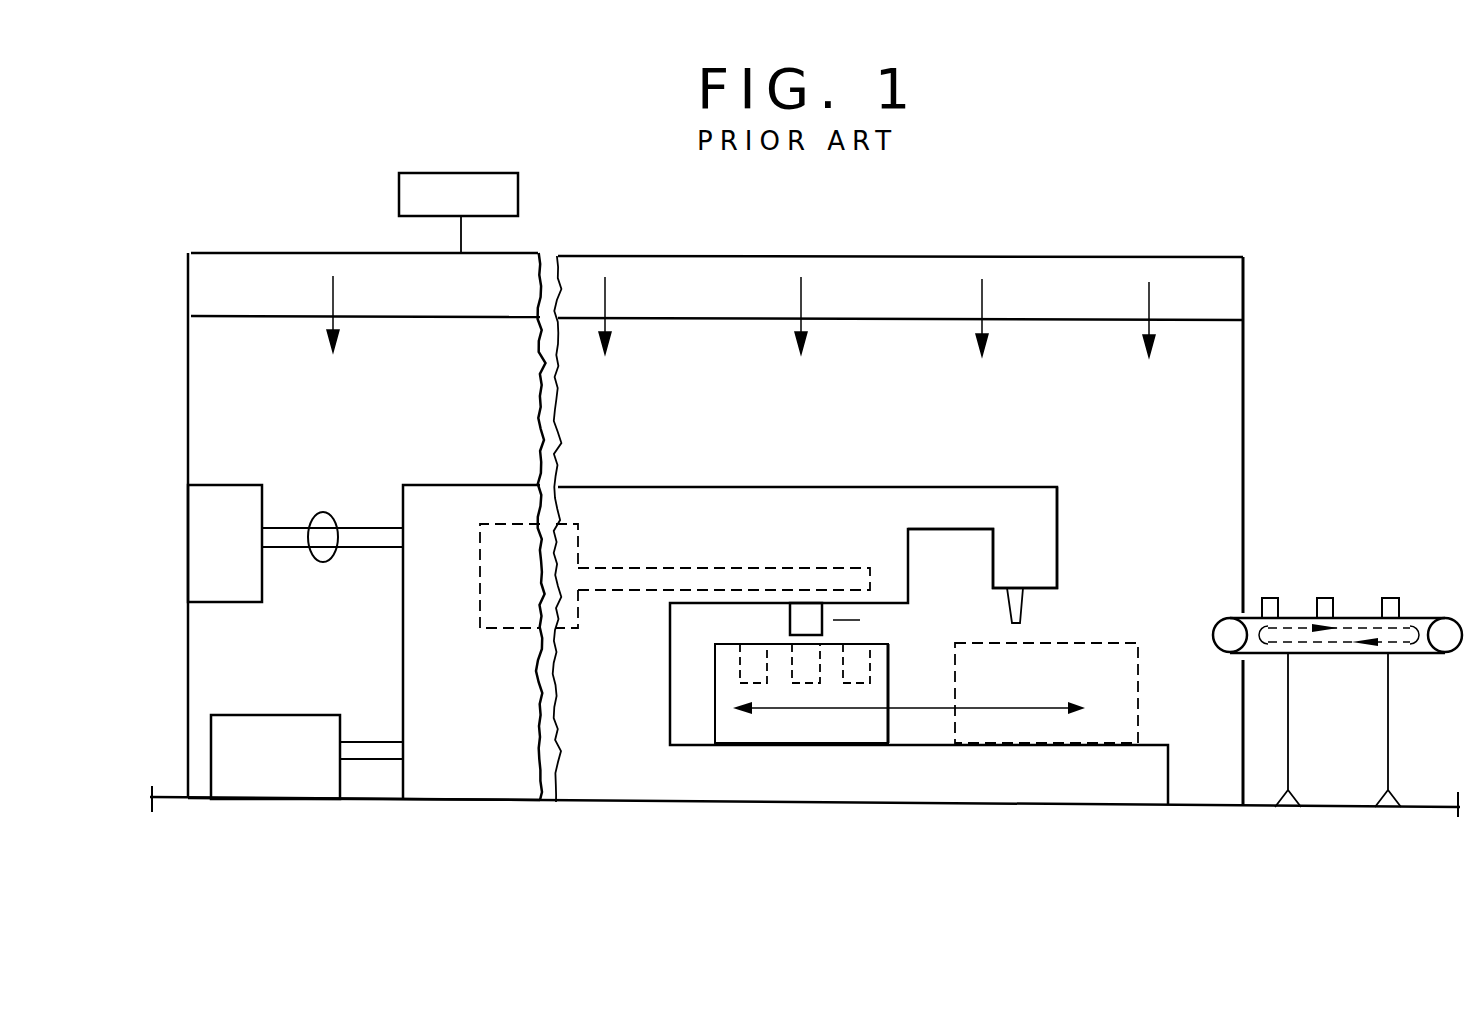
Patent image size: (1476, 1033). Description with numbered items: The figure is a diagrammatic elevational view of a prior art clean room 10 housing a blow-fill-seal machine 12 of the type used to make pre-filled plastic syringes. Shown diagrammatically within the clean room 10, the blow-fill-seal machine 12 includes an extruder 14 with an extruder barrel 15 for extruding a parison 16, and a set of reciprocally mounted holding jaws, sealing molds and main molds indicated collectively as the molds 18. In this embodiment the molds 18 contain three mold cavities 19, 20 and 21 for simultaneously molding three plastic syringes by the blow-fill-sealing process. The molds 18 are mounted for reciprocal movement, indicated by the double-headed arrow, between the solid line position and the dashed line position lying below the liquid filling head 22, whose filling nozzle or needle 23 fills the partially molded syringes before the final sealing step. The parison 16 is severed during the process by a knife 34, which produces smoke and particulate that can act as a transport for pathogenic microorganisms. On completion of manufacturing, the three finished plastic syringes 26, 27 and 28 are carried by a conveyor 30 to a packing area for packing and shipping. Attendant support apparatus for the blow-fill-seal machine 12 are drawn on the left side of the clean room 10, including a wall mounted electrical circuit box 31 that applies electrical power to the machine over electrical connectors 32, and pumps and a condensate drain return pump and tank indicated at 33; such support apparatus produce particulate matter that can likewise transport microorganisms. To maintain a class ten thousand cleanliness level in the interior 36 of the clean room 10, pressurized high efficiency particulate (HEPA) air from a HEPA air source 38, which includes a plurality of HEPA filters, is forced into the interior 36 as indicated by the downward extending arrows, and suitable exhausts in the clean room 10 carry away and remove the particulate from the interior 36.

The clean room 10 is at (1155, 226).
The blow-fill-seal machine 12 is at (889, 476).
The extruder 14 is at (578, 510).
The extruder barrel 15 is at (740, 568).
The parison 16 is at (790, 617).
The molds 18 is at (900, 728).
The mold cavity 19 is at (740, 678).
The mold cavity 20 is at (800, 683).
The mold cavity 21 is at (855, 683).
The liquid filling head 22 is at (1080, 525).
The filling nozzle 23 is at (1008, 606).
The plastic syringe 26 is at (1268, 598).
The plastic syringe 27 is at (1326, 598).
The plastic syringe 28 is at (1391, 598).
The conveyor 30 is at (1449, 655).
The wall mounted electrical circuit box 31 is at (264, 498).
The electrical connectors 32 is at (326, 515).
The pumps and condensate drain return pump and tank 33 is at (284, 715).
The knife 34 is at (860, 620).
The interior 36 is at (1137, 441).
The HEPA air source 38 is at (400, 182).